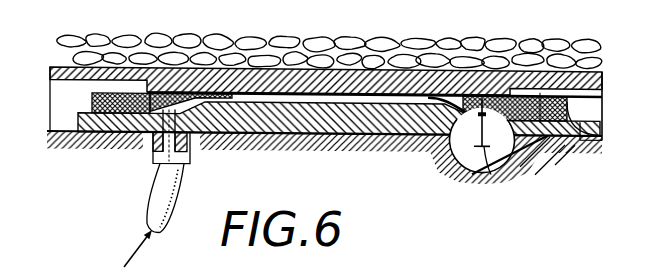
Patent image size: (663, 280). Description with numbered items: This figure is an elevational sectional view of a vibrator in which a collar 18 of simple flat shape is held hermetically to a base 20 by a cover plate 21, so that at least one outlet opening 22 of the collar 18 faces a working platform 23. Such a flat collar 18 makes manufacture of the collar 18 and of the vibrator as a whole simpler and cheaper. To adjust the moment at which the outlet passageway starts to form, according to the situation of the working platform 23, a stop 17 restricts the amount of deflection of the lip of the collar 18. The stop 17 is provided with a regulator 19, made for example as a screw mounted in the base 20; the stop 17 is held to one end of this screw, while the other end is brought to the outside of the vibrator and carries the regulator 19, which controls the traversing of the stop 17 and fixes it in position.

The stop 17 is at (458, 144).
The collar 18 is at (601, 135).
The regulator 19 is at (491, 172).
The base 20 is at (552, 148).
The cover plate 21 is at (593, 118).
The outlet opening 22 is at (421, 116).
The working platform 23 is at (594, 74).